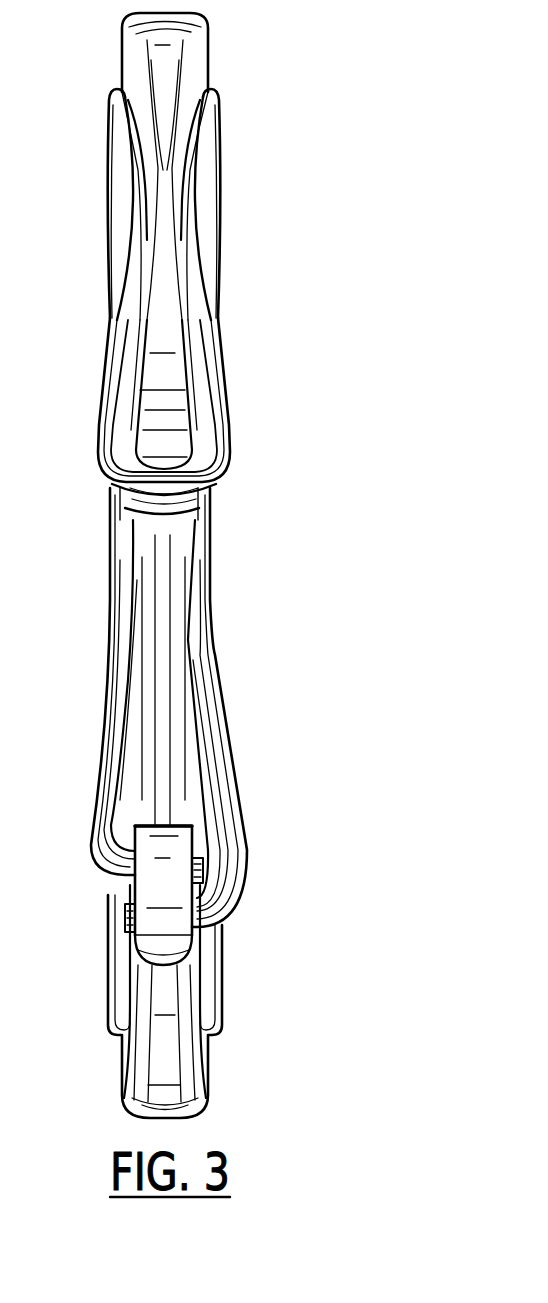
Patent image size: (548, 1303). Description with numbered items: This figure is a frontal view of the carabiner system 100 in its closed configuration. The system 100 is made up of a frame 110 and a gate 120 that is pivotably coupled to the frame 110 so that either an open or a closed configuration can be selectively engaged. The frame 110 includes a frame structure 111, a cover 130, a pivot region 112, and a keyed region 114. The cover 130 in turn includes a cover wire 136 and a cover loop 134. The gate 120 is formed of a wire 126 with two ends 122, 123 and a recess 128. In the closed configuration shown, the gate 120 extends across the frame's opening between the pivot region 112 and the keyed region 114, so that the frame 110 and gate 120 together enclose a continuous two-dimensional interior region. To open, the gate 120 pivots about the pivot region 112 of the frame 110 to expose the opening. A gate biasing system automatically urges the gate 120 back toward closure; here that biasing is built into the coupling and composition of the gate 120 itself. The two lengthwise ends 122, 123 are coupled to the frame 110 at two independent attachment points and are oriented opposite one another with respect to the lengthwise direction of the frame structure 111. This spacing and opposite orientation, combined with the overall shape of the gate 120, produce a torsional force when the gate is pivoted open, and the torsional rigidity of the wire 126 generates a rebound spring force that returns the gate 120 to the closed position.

The carabiner system 100 is at (334, 68).
The frame 110 is at (240, 218).
The frame structure 111 is at (153, 70).
The pivot region 112 is at (171, 888).
The keyed region 114 is at (178, 420).
The gate 120 is at (151, 707).
The gate end 122 is at (202, 871).
The gate end 123 is at (130, 920).
The wire 126 is at (218, 762).
The recess 128 is at (163, 722).
The cover 130 is at (171, 419).
The cover loop 134 is at (163, 494).
The cover wire 136 is at (101, 415).